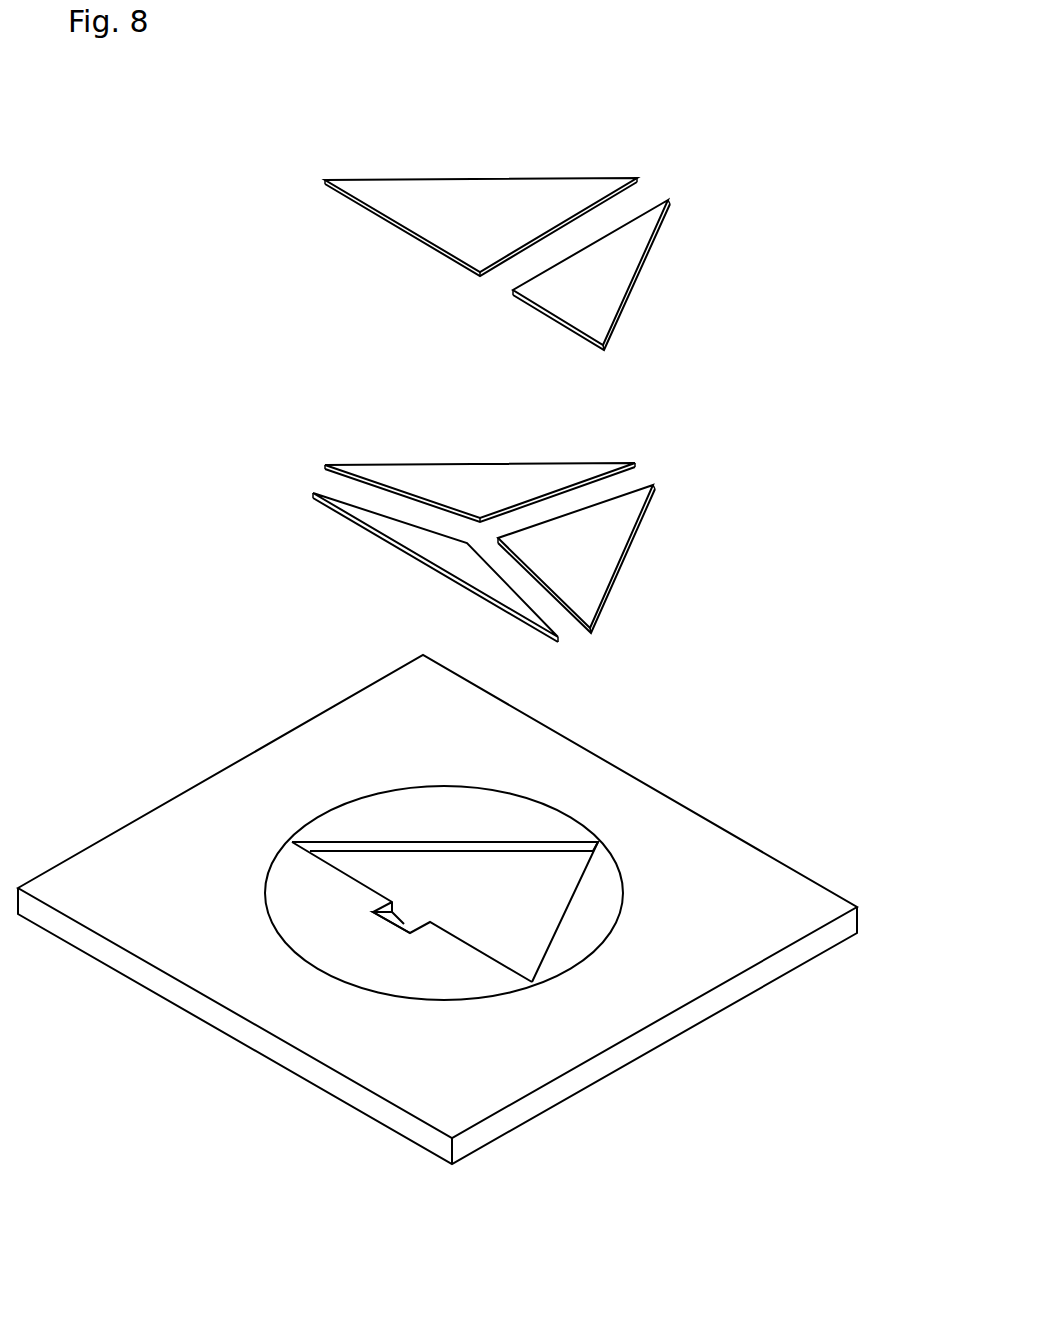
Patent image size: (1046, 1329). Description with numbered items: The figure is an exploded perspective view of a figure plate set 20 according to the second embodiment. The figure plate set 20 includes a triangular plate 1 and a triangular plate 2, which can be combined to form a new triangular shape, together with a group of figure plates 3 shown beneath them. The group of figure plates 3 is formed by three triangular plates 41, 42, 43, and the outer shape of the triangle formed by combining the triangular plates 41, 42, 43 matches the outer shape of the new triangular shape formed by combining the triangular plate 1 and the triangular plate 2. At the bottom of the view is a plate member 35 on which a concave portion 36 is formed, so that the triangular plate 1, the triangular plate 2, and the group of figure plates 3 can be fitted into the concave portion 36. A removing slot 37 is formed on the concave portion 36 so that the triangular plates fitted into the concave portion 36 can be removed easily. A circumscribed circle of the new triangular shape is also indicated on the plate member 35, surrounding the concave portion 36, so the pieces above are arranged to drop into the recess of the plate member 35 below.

The triangular plate 1 is at (456, 153).
The triangular plate 2 is at (690, 258).
The figure plate set 20 is at (786, 325).
The group of figure plates 3 is at (688, 530).
The triangular plate 41 is at (458, 461).
The triangular plate 42 is at (618, 580).
The triangular plate 43 is at (362, 528).
The plate member 35 is at (673, 1040).
The concave portion 36 is at (427, 872).
The removing slot 37 is at (373, 914).